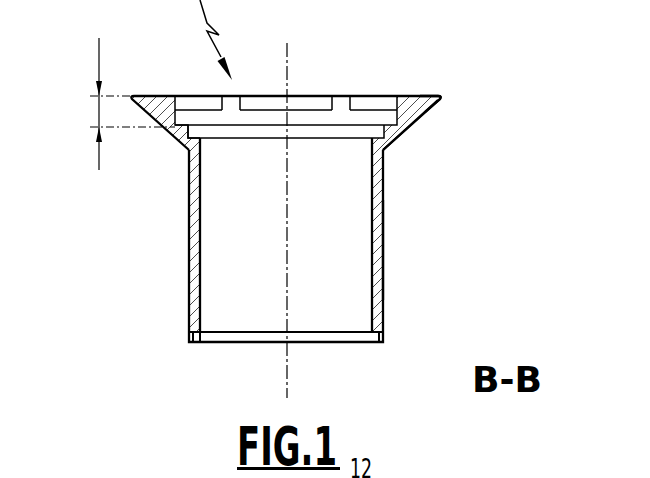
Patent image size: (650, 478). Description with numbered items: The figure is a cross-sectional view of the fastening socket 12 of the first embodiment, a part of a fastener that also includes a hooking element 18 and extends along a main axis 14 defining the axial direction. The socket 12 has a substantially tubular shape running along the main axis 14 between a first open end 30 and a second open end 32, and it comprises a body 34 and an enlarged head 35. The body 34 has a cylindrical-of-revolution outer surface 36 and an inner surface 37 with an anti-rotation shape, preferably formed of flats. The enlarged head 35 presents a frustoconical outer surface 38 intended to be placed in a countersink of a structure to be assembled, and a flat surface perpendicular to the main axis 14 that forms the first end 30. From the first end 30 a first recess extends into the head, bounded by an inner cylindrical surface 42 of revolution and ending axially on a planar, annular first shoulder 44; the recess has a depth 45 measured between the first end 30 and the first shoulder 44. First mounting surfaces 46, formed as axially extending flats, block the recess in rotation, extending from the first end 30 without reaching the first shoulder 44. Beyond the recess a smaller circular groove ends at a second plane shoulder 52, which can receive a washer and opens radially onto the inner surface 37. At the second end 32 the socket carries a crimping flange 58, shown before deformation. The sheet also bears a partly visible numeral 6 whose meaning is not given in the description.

The fastening socket 12 is at (61, 370).
The main axis 14 is at (287, 72).
The first open end 30 is at (440, 93).
The second open end 32 is at (238, 343).
The body 34 is at (430, 277).
The enlarged head 35 is at (474, 118).
The outer surface 36 is at (383, 243).
The inner surface 37 is at (372, 280).
The frustoconical outer surface 38 is at (408, 128).
The inner cylindrical surface 42 is at (342, 102).
The first shoulder 44 is at (396, 112).
The depth 45 is at (98, 110).
The first mounting surfaces 46 is at (262, 100).
The second plane shoulder 52 is at (190, 138).
The crimping flange 58 is at (192, 338).
The hooking element 18 is at (504, 472).
The sensor 6 is at (8, 471).